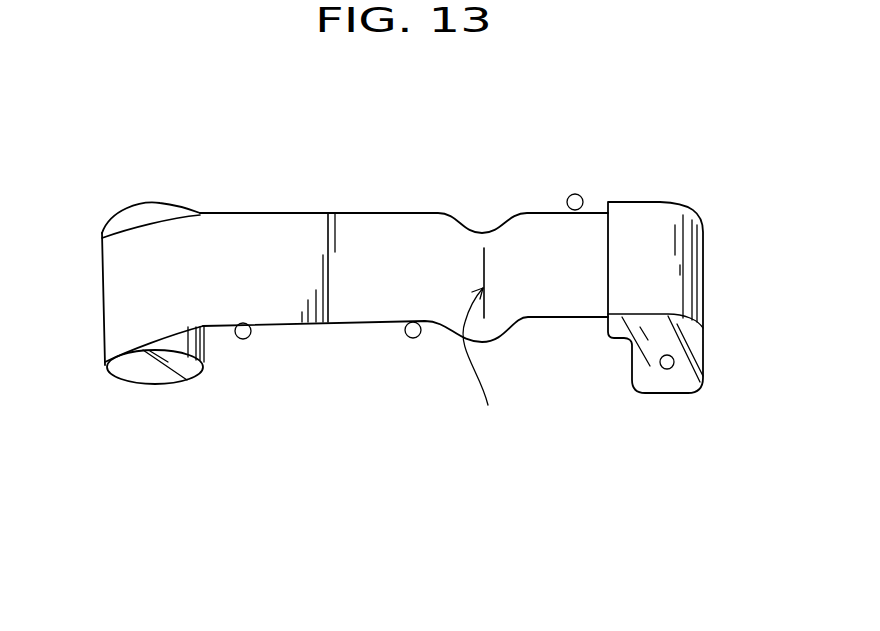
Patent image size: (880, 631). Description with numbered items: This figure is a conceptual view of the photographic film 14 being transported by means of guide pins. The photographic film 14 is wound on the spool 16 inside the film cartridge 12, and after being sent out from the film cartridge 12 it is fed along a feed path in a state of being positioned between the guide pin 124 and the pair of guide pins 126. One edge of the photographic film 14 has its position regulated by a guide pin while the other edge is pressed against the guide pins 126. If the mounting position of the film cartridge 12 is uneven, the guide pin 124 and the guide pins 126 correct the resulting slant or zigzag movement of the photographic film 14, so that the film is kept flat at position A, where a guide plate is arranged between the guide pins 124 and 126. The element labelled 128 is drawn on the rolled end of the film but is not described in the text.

The film cartridge 12 is at (650, 380).
The photographic film 14 is at (378, 210).
The spool 16 is at (667, 369).
The guide pin 124 is at (581, 195).
The guide pins 126 is at (240, 339).
The rolled end 128 is at (155, 382).
The position A is at (482, 364).